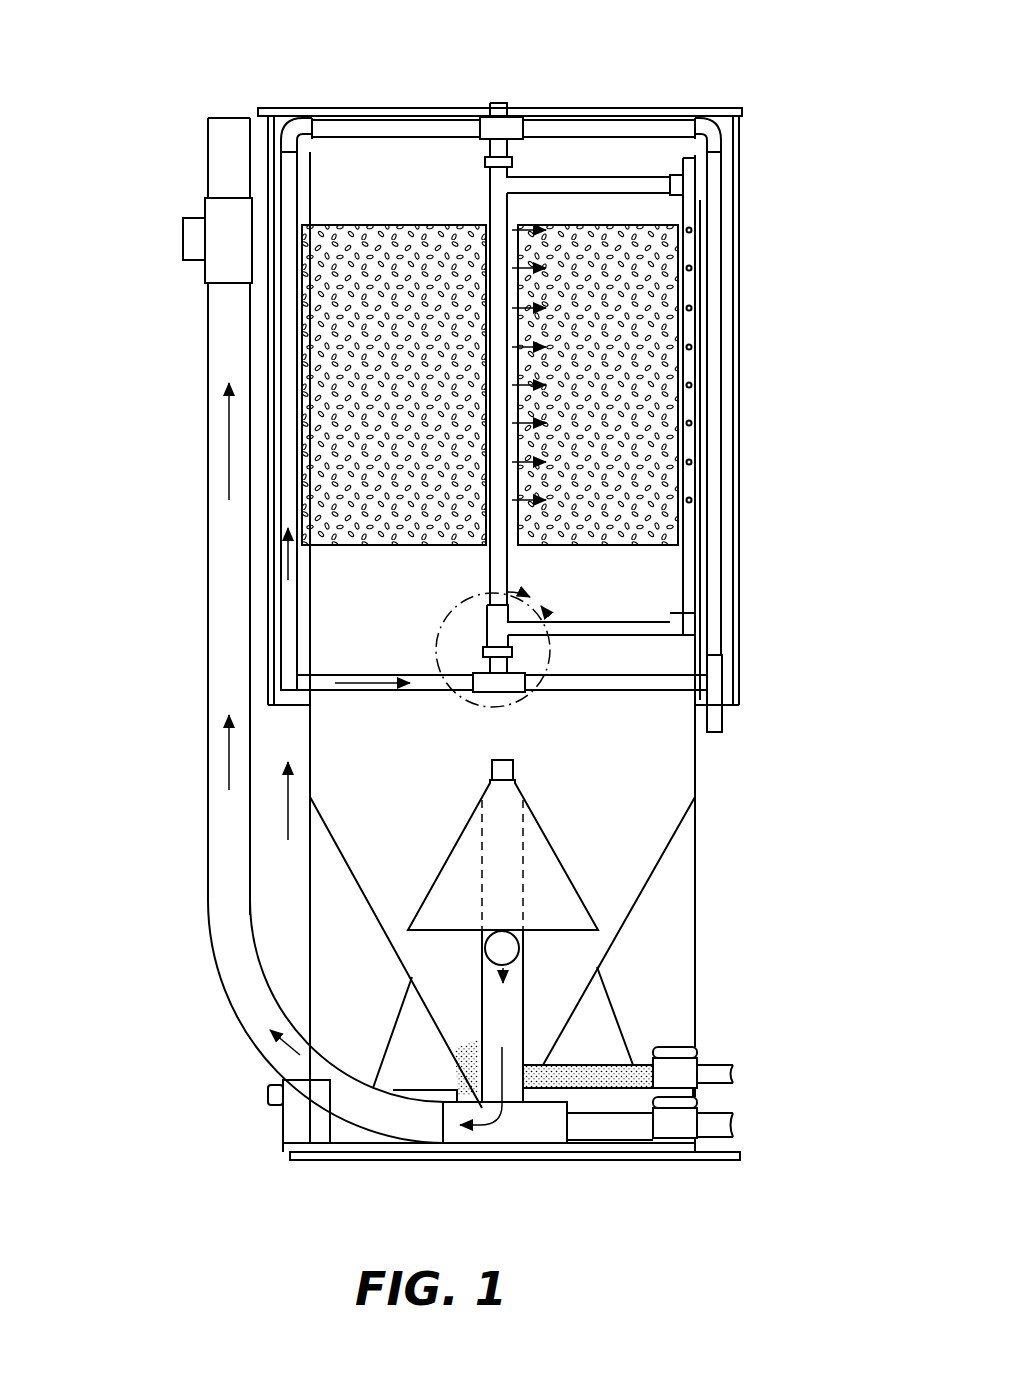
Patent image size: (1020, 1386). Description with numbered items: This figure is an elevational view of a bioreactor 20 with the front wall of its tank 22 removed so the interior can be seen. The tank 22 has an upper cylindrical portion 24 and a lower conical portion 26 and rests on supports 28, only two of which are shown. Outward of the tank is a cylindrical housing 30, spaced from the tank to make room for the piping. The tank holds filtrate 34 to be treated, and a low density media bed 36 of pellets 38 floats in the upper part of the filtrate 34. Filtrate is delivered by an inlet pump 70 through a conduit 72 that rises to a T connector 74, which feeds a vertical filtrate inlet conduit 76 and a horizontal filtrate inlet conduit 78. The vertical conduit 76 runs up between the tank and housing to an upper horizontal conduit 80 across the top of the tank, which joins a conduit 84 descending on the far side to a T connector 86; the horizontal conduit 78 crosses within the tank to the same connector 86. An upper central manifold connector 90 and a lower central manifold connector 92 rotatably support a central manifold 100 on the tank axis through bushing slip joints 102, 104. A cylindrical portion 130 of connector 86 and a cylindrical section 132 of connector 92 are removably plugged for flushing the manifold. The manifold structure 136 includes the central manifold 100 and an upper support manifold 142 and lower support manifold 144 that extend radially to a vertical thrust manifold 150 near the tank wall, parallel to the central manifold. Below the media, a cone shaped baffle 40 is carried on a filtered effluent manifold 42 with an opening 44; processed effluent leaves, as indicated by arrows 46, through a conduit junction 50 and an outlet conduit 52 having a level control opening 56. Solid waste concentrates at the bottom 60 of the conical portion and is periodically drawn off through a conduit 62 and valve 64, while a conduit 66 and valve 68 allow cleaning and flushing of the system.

The bioreactor 20 is at (733, 66).
The tank 22 is at (700, 650).
The upper cylindrical portion 24 is at (700, 410).
The lower conical portion 26 is at (650, 874).
The supports 28 is at (653, 936).
The cylindrical housing 30 is at (742, 519).
The filtrate 34 is at (345, 223).
The low density media bed 36 is at (670, 363).
The pellets 38 is at (643, 325).
The cone shaped baffle 40 is at (552, 847).
The filtered effluent manifold 42 is at (512, 1023).
The opening 44 is at (512, 950).
The arrows 46 is at (482, 1108).
The conduit junction 50 is at (550, 1128).
The outlet conduit 52 is at (208, 845).
The level control opening 56 is at (183, 238).
The bottom 60 is at (530, 1063).
The conduit 62 is at (677, 1075).
The valve 64 is at (693, 1088).
The conduit 66 is at (618, 1126).
The valve 68 is at (683, 1128).
The inlet pump 70 is at (290, 1122).
The conduit 72 is at (287, 918).
The T connector 74 is at (300, 678).
The vertical filtrate inlet conduit 76 is at (287, 521).
The horizontal filtrate inlet conduit 78 is at (560, 715).
The upper horizontal conduit 80 is at (410, 127).
The conduit 84 is at (715, 207).
The T connector 86 is at (715, 688).
The upper central manifold connector 90 is at (505, 125).
The lower central manifold connector 92 is at (487, 671).
The central manifold 100 is at (498, 552).
The bushing slip joint 102 is at (484, 162).
The bushing slip joint 104 is at (515, 640).
The cylindrical portion 130 is at (713, 733).
The cylindrical section 132 is at (497, 103).
The manifold structure 136 is at (466, 212).
The upper support manifold 142 is at (640, 175).
The lower support manifold 144 is at (620, 624).
The vertical thrust manifold 150 is at (680, 397).